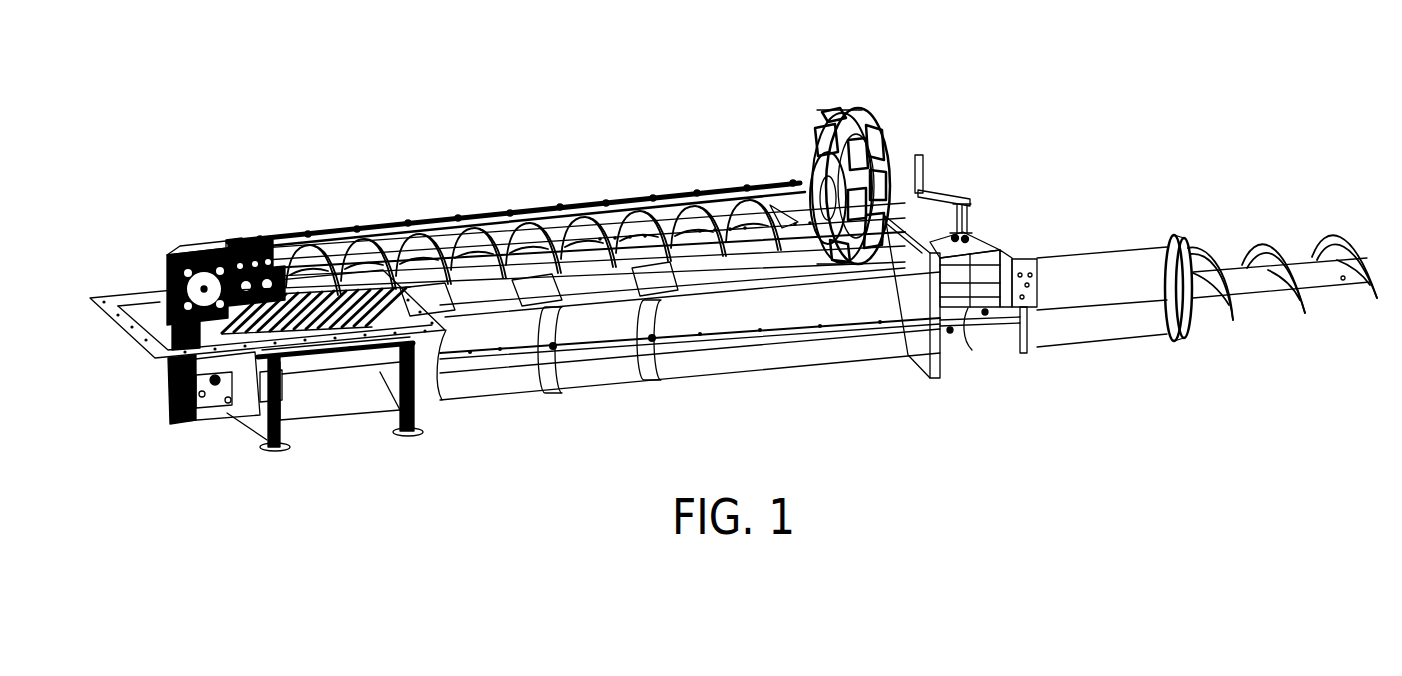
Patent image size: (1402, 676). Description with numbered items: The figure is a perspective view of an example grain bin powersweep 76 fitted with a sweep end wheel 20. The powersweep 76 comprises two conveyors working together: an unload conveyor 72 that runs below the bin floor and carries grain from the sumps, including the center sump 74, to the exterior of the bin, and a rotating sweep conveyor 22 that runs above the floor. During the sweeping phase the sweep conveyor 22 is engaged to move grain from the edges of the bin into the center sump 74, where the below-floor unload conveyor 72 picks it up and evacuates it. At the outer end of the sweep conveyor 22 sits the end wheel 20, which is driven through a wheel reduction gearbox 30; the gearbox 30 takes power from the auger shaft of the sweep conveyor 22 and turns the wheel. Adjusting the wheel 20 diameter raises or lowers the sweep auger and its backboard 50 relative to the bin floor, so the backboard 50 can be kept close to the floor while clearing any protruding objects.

The grain bin powersweep 76 is at (579, 116).
The sweep end wheel 20 is at (887, 117).
The wheel reduction gearbox 30 is at (812, 178).
The sweep conveyor 22 is at (652, 194).
The backboard 50 is at (498, 207).
The unload conveyor 72 is at (492, 383).
The center sump 74 is at (322, 403).